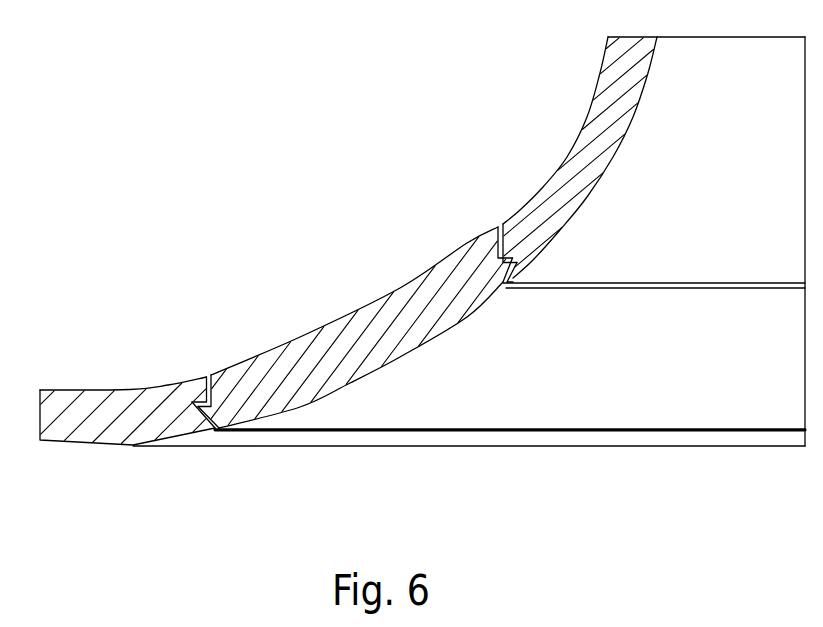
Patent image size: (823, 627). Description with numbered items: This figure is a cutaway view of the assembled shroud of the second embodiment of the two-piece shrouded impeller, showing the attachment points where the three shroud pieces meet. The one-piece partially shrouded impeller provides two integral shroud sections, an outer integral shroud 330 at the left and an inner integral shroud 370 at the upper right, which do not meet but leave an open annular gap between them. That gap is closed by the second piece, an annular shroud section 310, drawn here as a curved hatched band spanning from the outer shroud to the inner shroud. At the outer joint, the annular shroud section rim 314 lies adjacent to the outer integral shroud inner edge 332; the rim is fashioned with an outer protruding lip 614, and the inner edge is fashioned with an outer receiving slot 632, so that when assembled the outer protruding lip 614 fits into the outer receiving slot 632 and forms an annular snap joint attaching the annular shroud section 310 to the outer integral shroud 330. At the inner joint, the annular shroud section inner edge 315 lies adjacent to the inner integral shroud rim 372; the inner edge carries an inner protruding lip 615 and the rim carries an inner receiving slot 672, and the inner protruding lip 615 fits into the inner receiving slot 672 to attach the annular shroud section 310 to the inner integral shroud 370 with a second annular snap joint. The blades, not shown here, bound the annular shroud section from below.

The annular shroud section 310 is at (358, 327).
The annular shroud section rim 314 is at (262, 348).
The annular shroud section inner edge 315 is at (489, 200).
The outer integral shroud 330 is at (116, 395).
The outer integral shroud inner edge 332 is at (160, 368).
The inner integral shroud 370 is at (580, 157).
The inner integral shroud rim 372 is at (604, 227).
The outer protruding lip 614 is at (262, 443).
The inner protruding lip 615 is at (456, 239).
The outer receiving slot 632 is at (154, 457).
The inner receiving slot 672 is at (587, 299).